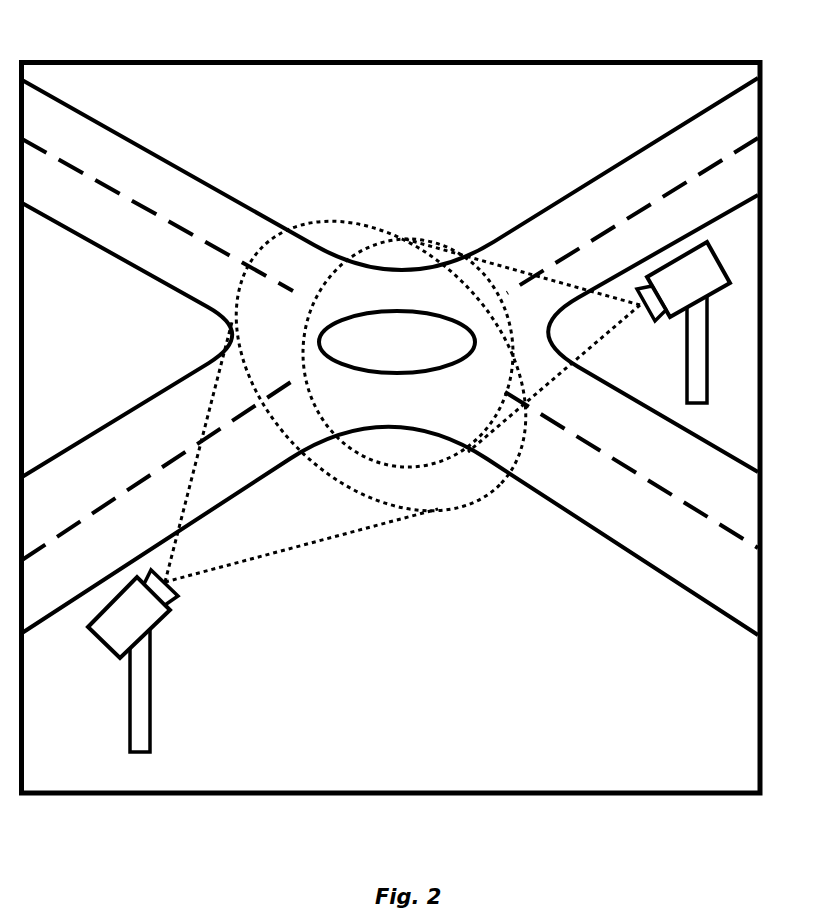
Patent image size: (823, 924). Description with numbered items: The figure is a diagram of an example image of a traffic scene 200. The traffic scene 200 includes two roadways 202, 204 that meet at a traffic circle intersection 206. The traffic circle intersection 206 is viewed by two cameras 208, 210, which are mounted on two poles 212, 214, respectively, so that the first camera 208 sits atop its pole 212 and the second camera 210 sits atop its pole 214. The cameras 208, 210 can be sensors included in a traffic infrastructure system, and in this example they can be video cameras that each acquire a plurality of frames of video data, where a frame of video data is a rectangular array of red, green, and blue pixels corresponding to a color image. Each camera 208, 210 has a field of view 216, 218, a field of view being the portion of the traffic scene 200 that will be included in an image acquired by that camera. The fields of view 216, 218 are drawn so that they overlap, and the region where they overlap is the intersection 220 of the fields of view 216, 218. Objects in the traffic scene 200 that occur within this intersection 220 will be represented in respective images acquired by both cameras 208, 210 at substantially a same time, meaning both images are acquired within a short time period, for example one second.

The traffic scene 200 is at (218, 62).
The roadway 202 is at (150, 152).
The roadway 204 is at (627, 157).
The traffic circle intersection 206 is at (372, 195).
The camera 208 is at (157, 627).
The camera 210 is at (672, 316).
The pole 212 is at (152, 688).
The pole 214 is at (708, 340).
The field of view 216 is at (485, 508).
The field of view 218 is at (418, 238).
The intersection of fields of view 220 is at (470, 403).